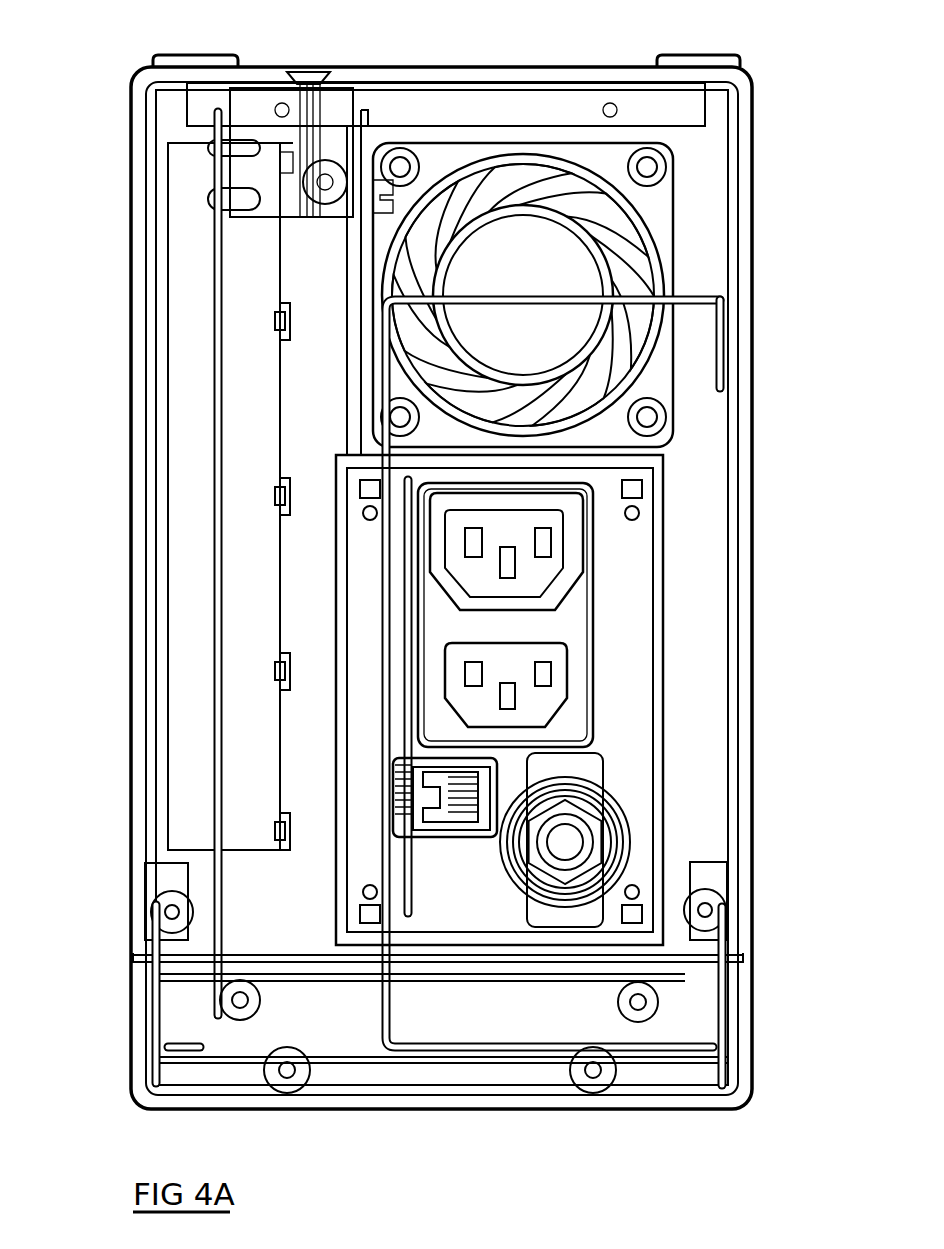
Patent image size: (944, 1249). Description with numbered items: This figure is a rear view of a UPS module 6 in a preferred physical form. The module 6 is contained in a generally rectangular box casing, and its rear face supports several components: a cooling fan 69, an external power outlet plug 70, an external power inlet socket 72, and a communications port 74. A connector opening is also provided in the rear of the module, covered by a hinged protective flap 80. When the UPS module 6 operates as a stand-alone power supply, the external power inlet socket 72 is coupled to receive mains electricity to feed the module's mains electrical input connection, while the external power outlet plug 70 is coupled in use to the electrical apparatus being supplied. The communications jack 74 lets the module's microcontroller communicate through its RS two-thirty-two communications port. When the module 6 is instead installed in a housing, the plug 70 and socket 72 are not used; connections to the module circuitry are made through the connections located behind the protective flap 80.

The UPS module 6 is at (801, 107).
The cooling fan 69 is at (531, 278).
The external power outlet plug 70 is at (540, 572).
The external power inlet socket 72 is at (540, 706).
The communications port 74 is at (440, 797).
The hinged protective flap 80 is at (183, 672).